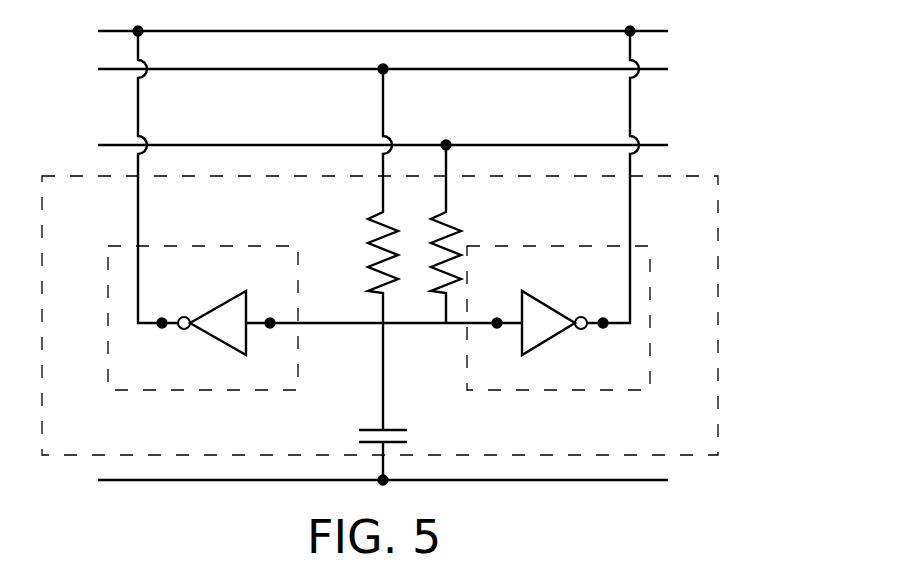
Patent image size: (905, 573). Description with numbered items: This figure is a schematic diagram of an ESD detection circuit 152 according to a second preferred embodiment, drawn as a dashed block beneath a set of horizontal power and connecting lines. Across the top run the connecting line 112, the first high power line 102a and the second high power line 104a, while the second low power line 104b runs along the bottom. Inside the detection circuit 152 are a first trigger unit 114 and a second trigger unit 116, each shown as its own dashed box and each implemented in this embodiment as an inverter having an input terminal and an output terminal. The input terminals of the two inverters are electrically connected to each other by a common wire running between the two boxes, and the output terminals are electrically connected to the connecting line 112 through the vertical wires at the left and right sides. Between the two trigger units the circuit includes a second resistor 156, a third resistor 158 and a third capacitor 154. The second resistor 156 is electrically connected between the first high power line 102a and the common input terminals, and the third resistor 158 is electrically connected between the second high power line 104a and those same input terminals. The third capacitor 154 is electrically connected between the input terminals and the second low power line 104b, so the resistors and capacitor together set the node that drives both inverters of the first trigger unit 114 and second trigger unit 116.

The connecting line 112 is at (648, 31).
The first high power line 102a is at (647, 69).
The second high power line 104a is at (647, 145).
The second low power line 104b is at (648, 480).
The ESD detection circuit 152 is at (718, 176).
The first trigger unit 114 is at (118, 246).
The second trigger unit 116 is at (649, 318).
The second resistor 156 is at (372, 230).
The third resistor 158 is at (453, 220).
The third capacitor 154 is at (362, 433).